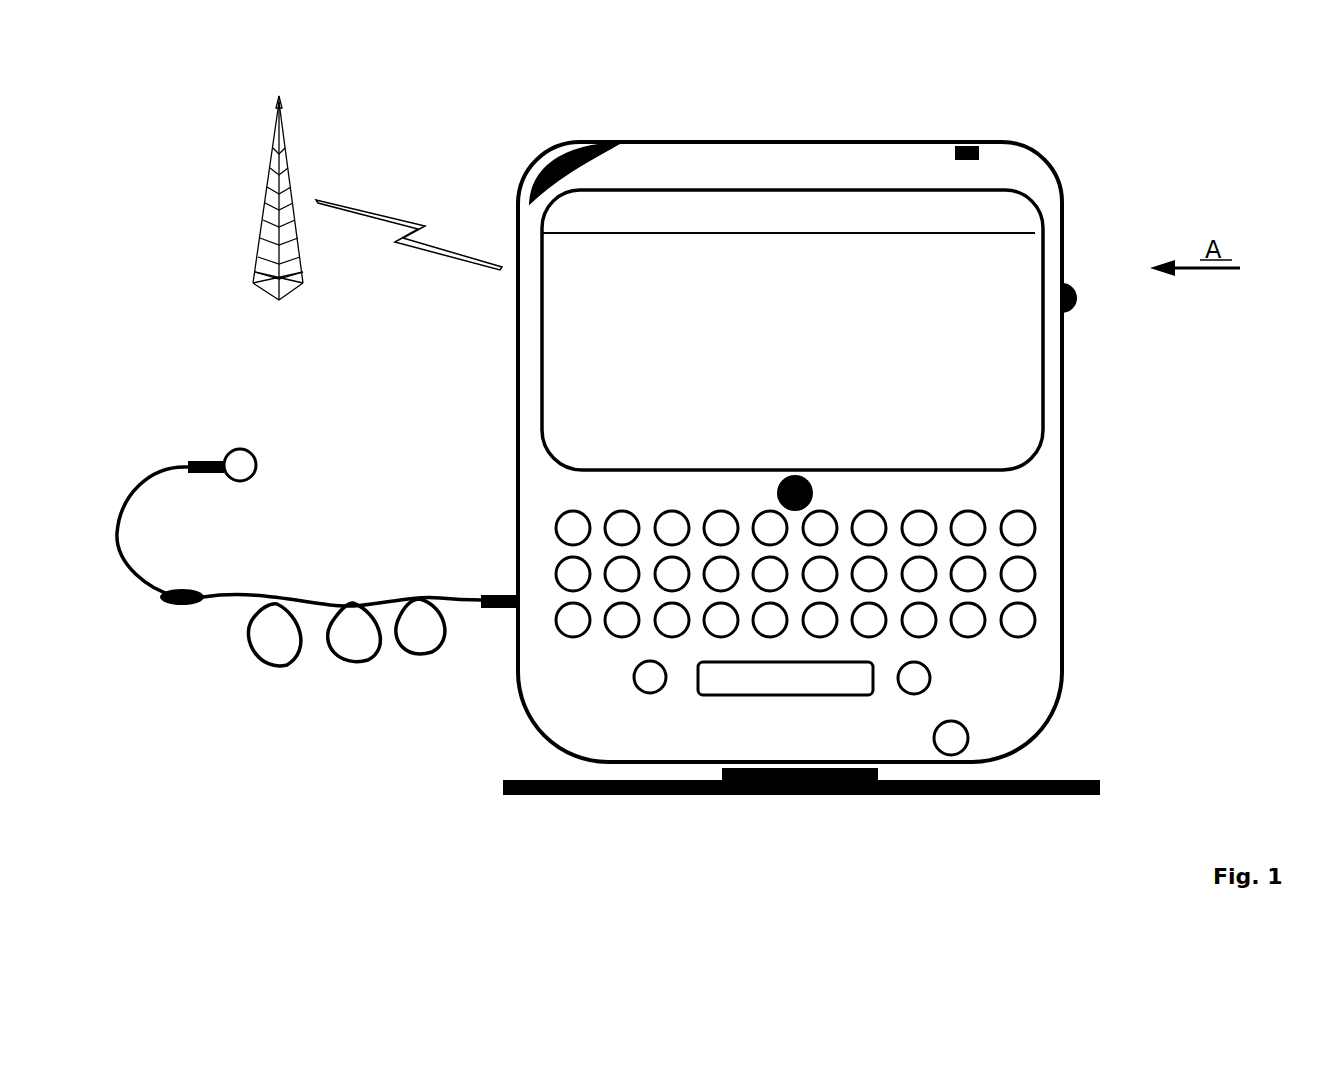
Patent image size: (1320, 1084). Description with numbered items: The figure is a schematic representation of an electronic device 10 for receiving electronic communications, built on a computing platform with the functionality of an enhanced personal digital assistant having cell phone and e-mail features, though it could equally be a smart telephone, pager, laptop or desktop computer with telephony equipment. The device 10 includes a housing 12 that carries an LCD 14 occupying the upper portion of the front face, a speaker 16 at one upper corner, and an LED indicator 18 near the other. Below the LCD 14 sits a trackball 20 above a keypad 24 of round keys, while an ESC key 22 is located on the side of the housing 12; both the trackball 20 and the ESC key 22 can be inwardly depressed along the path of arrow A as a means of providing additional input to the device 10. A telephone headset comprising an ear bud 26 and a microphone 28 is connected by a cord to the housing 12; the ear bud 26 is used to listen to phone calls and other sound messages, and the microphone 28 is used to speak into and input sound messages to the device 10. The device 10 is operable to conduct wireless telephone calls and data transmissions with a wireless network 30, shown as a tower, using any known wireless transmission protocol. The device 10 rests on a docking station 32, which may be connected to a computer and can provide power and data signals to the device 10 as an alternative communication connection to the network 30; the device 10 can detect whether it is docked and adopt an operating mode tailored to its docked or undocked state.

The electronic device 10 is at (1088, 446).
The housing 12 is at (1010, 730).
The LCD 14 is at (525, 403).
The speaker 16 is at (538, 155).
The LED indicator 18 is at (983, 152).
The trackball 20 is at (857, 497).
The ESC key 22 is at (1080, 298).
The keypad 24 is at (1052, 585).
The ear bud 26 is at (280, 457).
The microphone 28 is at (225, 582).
The wireless network 30 is at (278, 222).
The docking station 32 is at (801, 802).